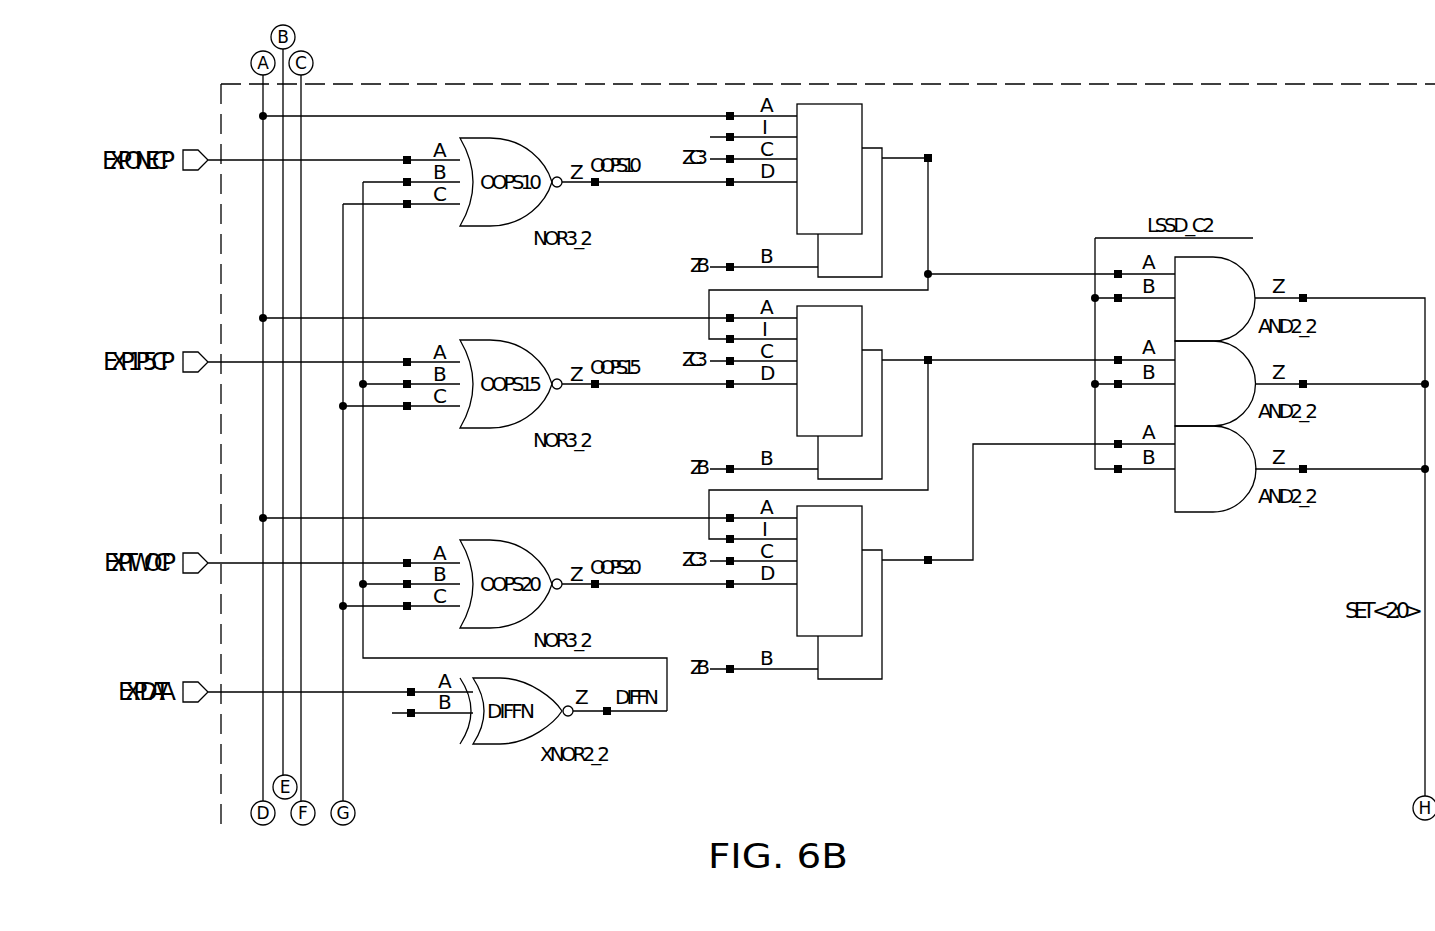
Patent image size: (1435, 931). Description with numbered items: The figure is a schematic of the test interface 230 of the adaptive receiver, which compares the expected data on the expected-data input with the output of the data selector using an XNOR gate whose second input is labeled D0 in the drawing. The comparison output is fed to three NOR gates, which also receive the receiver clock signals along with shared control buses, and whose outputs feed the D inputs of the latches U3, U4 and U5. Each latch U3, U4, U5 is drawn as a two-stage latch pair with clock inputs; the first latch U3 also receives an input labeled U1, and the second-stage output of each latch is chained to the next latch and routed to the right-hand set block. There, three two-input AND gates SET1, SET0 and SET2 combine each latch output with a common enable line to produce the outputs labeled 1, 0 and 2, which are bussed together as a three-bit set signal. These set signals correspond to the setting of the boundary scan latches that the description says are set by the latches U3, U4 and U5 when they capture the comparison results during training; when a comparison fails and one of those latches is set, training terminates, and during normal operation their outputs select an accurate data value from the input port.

The test interface 230 is at (995, 85).
The input signal U1 is at (741, 133).
The latch U3 is at (719, 221).
The latch U4 is at (719, 422).
The latch U5 is at (719, 561).
The input signal D0 is at (424, 704).
The AND gate SET1 is at (1215, 299).
The AND gate SET0 is at (1215, 383).
The AND gate SET2 is at (1215, 469).
The SET output bit 1 is at (1340, 533).
The SET output bit 0 is at (1342, 372).
The SET output bit 2 is at (1342, 457).